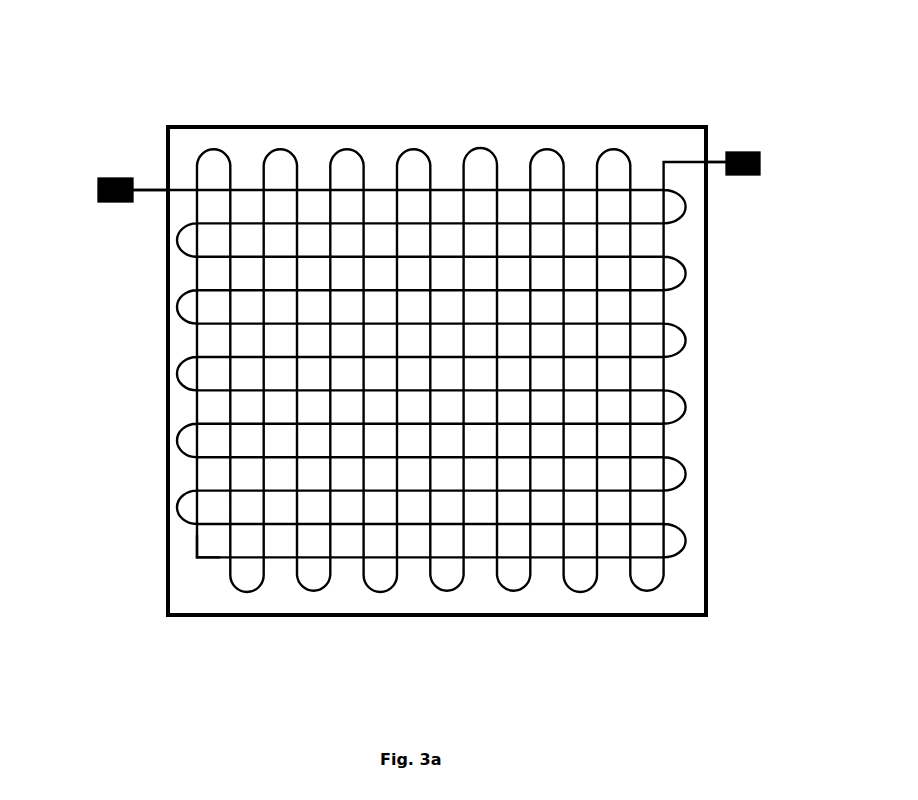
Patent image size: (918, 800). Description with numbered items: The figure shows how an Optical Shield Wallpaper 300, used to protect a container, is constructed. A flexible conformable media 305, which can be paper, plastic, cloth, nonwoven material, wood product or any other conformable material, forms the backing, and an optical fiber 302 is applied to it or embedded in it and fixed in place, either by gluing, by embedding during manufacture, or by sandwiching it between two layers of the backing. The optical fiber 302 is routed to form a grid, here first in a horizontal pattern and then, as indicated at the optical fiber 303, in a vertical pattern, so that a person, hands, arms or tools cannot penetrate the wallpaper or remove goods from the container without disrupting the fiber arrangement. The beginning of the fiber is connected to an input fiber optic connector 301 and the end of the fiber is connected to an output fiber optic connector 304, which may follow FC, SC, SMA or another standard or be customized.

The Optical Shield Wallpaper 300 is at (338, 60).
The input fiber optic connector 301 is at (116, 171).
The optical fiber 302 is at (185, 417).
The optical fiber vertical pattern 303 is at (192, 563).
The output fiber optic connector 304 is at (759, 135).
The flexible conformable media 305 is at (583, 120).